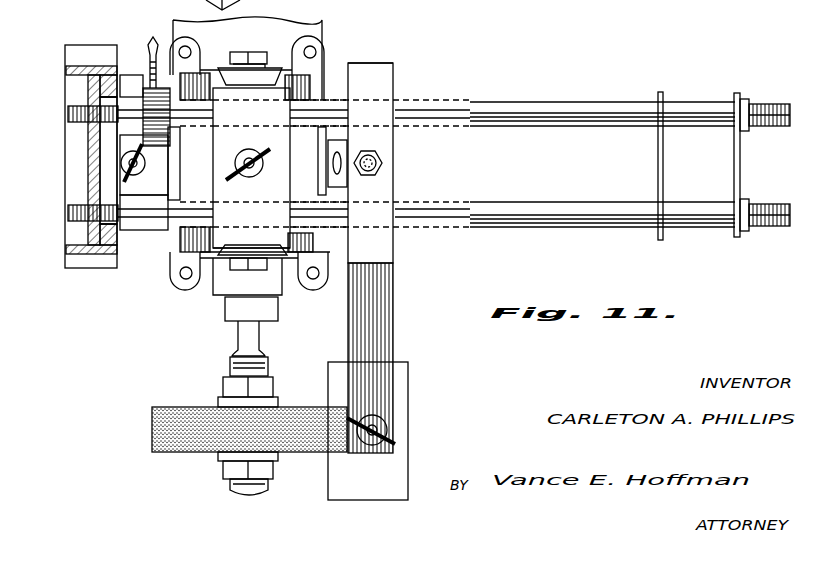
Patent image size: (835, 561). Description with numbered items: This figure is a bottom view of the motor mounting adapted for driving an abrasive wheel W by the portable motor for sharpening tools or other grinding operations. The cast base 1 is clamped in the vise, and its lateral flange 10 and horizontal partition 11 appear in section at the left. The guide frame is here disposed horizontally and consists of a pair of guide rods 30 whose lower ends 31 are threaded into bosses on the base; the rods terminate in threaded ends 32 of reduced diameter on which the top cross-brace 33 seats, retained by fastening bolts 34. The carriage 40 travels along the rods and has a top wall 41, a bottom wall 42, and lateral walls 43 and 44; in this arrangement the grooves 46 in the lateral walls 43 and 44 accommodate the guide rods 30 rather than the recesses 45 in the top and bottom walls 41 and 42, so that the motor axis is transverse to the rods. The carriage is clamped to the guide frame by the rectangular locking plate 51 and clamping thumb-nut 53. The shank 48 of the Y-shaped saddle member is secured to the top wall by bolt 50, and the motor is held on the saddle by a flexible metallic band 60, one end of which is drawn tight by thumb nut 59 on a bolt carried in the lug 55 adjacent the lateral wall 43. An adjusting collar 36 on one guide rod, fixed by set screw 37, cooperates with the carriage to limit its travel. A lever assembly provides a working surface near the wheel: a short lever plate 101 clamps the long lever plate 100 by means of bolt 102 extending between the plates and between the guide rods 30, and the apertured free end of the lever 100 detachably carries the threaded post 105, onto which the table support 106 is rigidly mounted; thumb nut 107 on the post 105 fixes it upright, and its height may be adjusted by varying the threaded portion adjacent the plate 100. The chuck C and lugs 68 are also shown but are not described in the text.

The base 1 is at (94, 38).
The lateral flange 10 is at (68, 62).
The horizontal partition 11 is at (90, 163).
The guide rods 30 is at (578, 204).
The lower ends of guide rods 31 is at (68, 113).
The threaded ends 32 is at (766, 195).
The top cross-brace 33 is at (734, 158).
The fastening bolts 34 is at (746, 99).
The adjusting collar 36 is at (143, 96).
The set screw 37 is at (156, 35).
The carriage 40 is at (340, 89).
The top wall 41 is at (213, 68).
The bottom wall 42 is at (296, 275).
The lateral wall 43 is at (148, 190).
The lateral wall 44 is at (340, 192).
The grooves or recesses 45 is at (206, 96).
The grooves 46 is at (174, 128).
The shank 48 is at (270, 68).
The bolt 50 is at (256, 52).
The locking plate 51 is at (226, 153).
The thumb-nut 53 is at (240, 177).
The lug 55 is at (150, 196).
The thumb nut 59 is at (143, 160).
The flexible metallic band 60 is at (338, 133).
The lugs 68 is at (196, 48).
The long lever plate 100 is at (384, 325).
The short lever plate 101 is at (386, 82).
The bolt 102 is at (382, 163).
The post 105 is at (372, 416).
The table support 106 is at (408, 400).
The thumb nut 107 is at (396, 444).
The chuck C is at (233, 312).
The abrasive wheel W is at (186, 432).